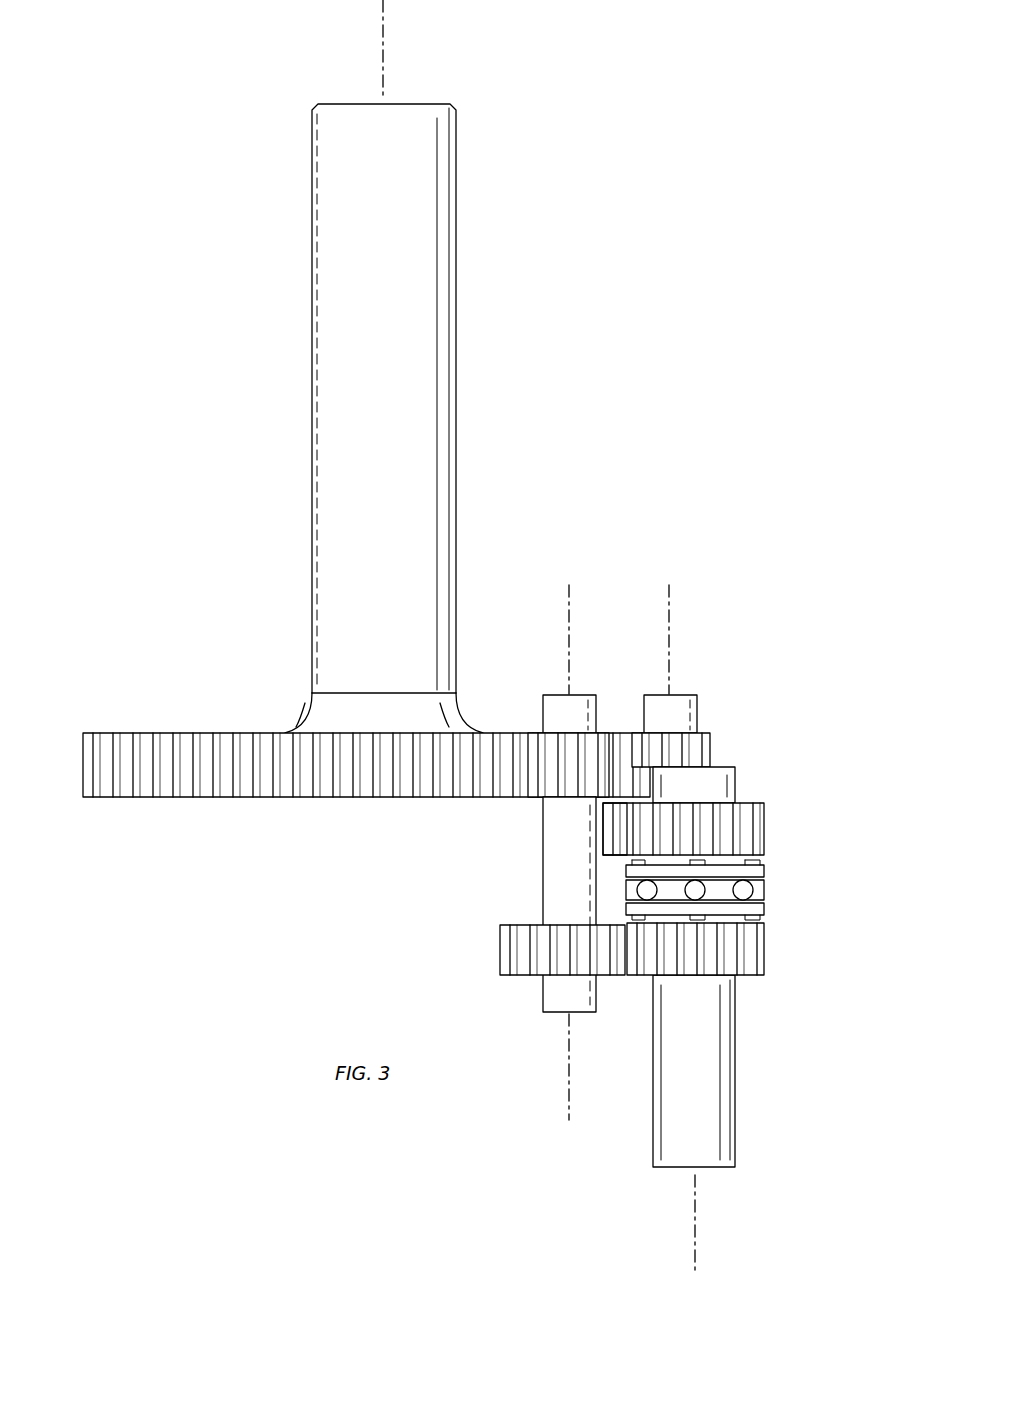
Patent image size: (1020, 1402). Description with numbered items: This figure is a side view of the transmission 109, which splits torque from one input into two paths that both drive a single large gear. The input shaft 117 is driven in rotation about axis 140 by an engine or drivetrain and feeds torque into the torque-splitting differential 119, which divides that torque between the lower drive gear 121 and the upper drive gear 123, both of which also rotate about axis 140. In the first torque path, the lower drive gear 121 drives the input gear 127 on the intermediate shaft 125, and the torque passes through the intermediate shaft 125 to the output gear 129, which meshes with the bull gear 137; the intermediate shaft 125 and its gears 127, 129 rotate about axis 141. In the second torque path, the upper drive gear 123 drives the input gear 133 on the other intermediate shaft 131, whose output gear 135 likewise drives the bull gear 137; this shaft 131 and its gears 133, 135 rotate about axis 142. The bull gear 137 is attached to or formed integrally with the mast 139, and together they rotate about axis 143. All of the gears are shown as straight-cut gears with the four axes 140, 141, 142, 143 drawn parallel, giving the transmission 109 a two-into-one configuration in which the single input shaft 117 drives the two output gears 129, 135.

The transmission 109 is at (222, 52).
The input shaft 117 is at (737, 1072).
The torque-splitting differential mechanism 119 is at (772, 888).
The lower drive gear 121 is at (764, 950).
The upper drive gear 123 is at (764, 822).
The intermediate shaft 125 is at (543, 882).
The input gear 127 is at (500, 950).
The output gear 129 is at (545, 730).
The intermediate shaft 131 is at (698, 714).
The input gear 133 is at (603, 832).
The output gear 135 is at (711, 750).
The bull gear 137 is at (175, 733).
The mast 139 is at (312, 403).
The axis 140 is at (697, 1226).
The axis 141 is at (569, 638).
The axis 142 is at (670, 638).
The axis 143 is at (382, 42).